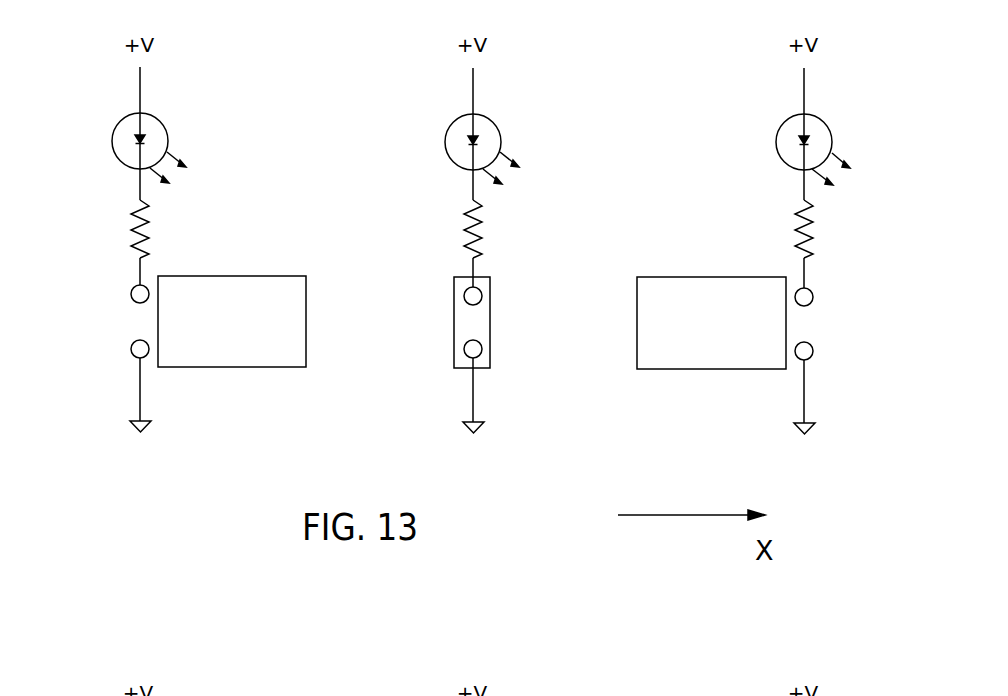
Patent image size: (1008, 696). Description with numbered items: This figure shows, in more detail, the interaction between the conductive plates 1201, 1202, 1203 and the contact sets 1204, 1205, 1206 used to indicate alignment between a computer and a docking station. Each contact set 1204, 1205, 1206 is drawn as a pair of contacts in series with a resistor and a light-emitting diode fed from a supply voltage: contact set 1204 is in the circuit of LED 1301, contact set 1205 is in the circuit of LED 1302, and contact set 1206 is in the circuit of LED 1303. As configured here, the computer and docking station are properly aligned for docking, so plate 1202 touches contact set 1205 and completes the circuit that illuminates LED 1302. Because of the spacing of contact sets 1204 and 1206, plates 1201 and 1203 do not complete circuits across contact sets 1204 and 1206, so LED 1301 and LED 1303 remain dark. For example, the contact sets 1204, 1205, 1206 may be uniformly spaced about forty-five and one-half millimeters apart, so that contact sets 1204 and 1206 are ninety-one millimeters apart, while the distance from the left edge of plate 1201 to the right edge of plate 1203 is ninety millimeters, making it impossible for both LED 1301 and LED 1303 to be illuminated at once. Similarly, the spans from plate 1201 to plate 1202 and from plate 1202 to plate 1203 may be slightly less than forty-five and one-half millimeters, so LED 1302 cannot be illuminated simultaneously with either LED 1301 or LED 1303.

The LED 1301 is at (166, 128).
The LED 1302 is at (452, 128).
The LED 1303 is at (783, 128).
The conductive plate 1201 is at (213, 368).
The conductive plate 1202 is at (453, 370).
The conductive plate 1203 is at (665, 370).
The contact set 1204 is at (117, 312).
The contact set 1205 is at (430, 293).
The contact set 1206 is at (823, 312).